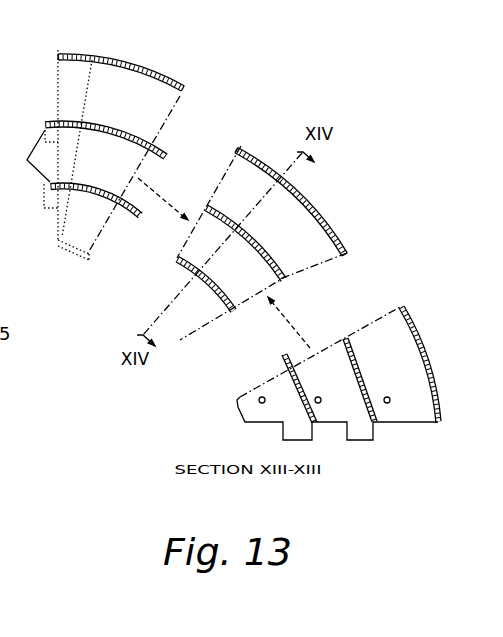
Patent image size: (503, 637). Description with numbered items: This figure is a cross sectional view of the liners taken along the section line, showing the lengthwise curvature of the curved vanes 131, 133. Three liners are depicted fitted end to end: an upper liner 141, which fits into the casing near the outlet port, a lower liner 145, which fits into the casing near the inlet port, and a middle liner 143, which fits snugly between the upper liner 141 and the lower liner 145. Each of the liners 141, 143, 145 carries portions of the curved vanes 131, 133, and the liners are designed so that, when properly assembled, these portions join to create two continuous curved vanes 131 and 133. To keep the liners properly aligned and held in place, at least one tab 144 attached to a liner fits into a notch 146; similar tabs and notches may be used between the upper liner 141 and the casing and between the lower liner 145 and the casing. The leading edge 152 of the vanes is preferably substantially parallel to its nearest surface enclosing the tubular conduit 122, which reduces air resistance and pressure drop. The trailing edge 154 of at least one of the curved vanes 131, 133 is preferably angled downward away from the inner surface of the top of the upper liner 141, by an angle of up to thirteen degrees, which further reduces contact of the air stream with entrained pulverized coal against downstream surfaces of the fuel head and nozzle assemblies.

The upper liner 141 is at (157, 73).
The curved vane 131 is at (208, 204).
The curved vane 133 is at (179, 257).
The tubular conduit 122 is at (224, 263).
The middle liner 143 is at (313, 210).
The tab 144 is at (347, 253).
The notch 146 is at (399, 306).
The lower liner 145 is at (426, 360).
The leading edge 152 is at (308, 440).
The trailing edge 154 is at (30, 169).